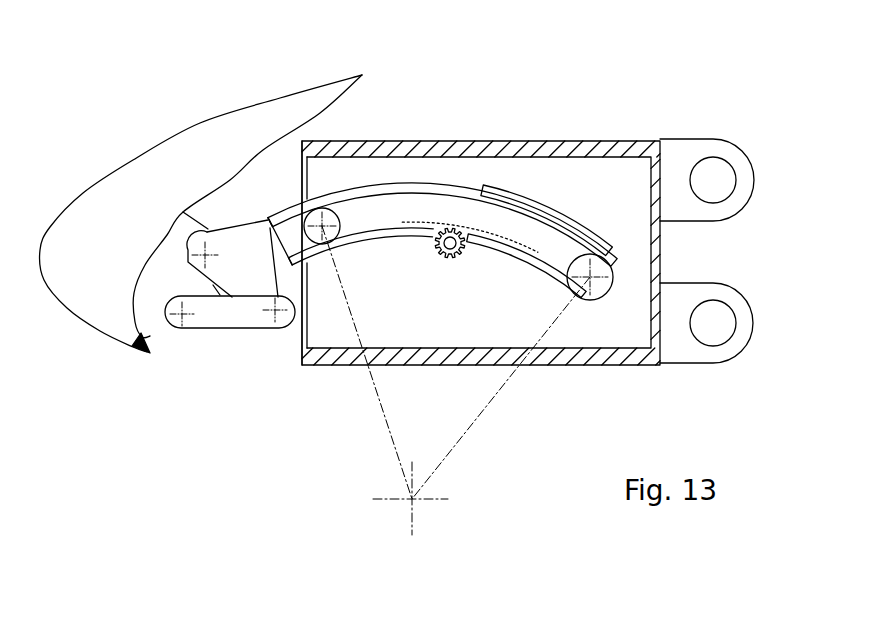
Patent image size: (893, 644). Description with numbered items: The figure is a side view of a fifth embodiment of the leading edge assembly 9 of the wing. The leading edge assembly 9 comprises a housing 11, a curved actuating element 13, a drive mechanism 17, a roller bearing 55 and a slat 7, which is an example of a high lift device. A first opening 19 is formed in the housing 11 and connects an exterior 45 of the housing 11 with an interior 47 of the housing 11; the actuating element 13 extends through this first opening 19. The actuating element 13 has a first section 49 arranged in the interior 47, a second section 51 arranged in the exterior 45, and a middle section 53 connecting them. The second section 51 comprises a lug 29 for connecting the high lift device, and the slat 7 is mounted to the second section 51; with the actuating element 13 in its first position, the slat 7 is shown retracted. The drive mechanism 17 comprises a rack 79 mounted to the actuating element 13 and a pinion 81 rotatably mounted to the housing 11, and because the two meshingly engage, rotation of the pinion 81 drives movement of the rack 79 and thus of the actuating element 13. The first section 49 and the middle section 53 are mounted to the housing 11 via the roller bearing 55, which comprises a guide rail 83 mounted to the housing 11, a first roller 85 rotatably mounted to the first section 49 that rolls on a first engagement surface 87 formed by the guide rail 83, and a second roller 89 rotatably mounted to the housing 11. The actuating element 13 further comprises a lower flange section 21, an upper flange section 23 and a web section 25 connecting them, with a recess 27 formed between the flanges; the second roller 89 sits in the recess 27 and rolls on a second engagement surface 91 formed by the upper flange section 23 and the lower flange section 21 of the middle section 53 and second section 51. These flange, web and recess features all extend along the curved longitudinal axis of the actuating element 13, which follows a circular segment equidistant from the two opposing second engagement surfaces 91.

The slat 7 is at (183, 140).
The leading edge assembly 9 is at (680, 96).
The housing 11 is at (633, 152).
The actuating element 13 is at (293, 227).
The drive mechanism 17 is at (477, 260).
The first opening 19 is at (280, 202).
The lower flange section 21 is at (322, 245).
The upper flange section 23 is at (358, 195).
The web section 25 is at (398, 197).
The recess 27 is at (283, 252).
The lug 29 is at (197, 263).
The exterior 45 is at (106, 107).
The interior 47 is at (629, 196).
The first section 49 is at (553, 237).
The second section 51 is at (247, 270).
The middle section 53 is at (425, 205).
The roller bearing 55 is at (617, 293).
The rack 79 is at (500, 232).
The pinion 81 is at (452, 228).
The guide rail 83 is at (538, 232).
The first roller 85 is at (598, 300).
The first engagement surface 87 is at (560, 267).
The second roller 89 is at (327, 208).
The second engagement surface 91 is at (355, 230).